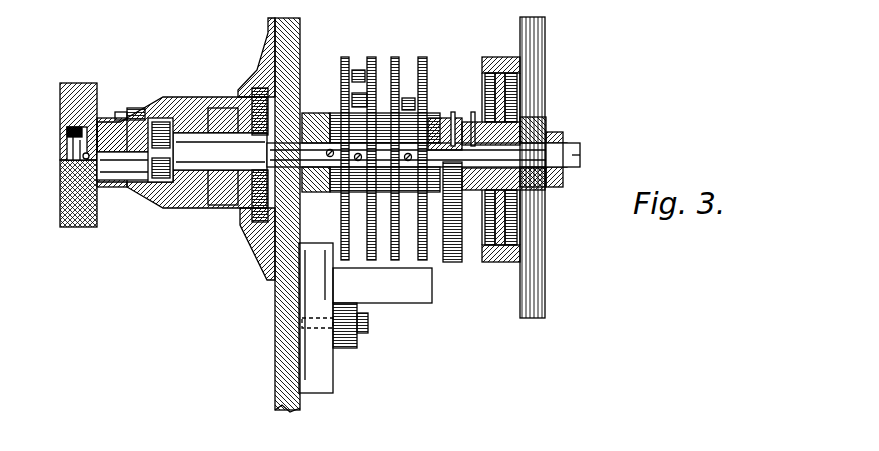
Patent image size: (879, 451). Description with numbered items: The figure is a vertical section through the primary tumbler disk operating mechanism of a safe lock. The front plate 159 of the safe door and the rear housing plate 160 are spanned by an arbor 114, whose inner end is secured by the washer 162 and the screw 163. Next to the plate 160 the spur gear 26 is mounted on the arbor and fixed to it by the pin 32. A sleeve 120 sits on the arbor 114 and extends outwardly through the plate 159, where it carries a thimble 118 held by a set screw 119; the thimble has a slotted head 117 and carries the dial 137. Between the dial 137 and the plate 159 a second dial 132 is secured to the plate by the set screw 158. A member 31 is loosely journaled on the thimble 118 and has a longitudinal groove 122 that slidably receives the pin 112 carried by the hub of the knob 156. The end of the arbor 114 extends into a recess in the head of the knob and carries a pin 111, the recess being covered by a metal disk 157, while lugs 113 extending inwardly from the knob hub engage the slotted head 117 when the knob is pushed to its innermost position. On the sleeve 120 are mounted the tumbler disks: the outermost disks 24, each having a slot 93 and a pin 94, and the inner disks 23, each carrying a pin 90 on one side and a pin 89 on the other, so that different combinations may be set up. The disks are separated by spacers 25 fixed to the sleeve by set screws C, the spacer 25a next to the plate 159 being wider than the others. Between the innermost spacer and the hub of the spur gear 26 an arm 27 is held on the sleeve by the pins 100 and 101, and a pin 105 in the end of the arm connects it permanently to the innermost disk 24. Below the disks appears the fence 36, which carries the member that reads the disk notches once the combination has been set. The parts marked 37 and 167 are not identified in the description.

The pin 111 is at (67, 142).
The metal disk 157 is at (62, 158).
The knob 156 is at (80, 229).
The longitudinal groove 122 is at (122, 112).
The pin 112 is at (134, 108).
The slotted head 117 is at (167, 110).
The thimble 118 is at (200, 147).
The lugs 113 is at (157, 209).
The member 31 is at (183, 205).
The set screw 119 is at (254, 148).
The dial 137 is at (238, 222).
The set screw 158 is at (253, 263).
The second dial 132 is at (270, 280).
The front plate 159 is at (272, 346).
The spacer 25a is at (330, 115).
The pin 89 is at (352, 98).
The outermost tumbler disks 24 is at (346, 56).
The pin 94 is at (358, 69).
The inner tumbler disks 23 is at (372, 56).
The pin 90 is at (407, 96).
The sleeve 120 is at (439, 134).
The pin 100 is at (453, 110).
The pin 101 is at (463, 112).
The pin 32 is at (473, 110).
The rear housing plate 160 is at (548, 98).
The arbor 114 is at (548, 124).
The washer 162 is at (566, 134).
The screw 163 is at (583, 165).
The slot 93 is at (339, 218).
The set screw C is at (407, 193).
The spacers 25 is at (435, 196).
The arm 27 is at (458, 264).
The pin 105 is at (438, 246).
The bracket 37 is at (409, 306).
The block 167 is at (371, 335).
The fence 36 is at (352, 350).
The spur gear 26 is at (498, 264).